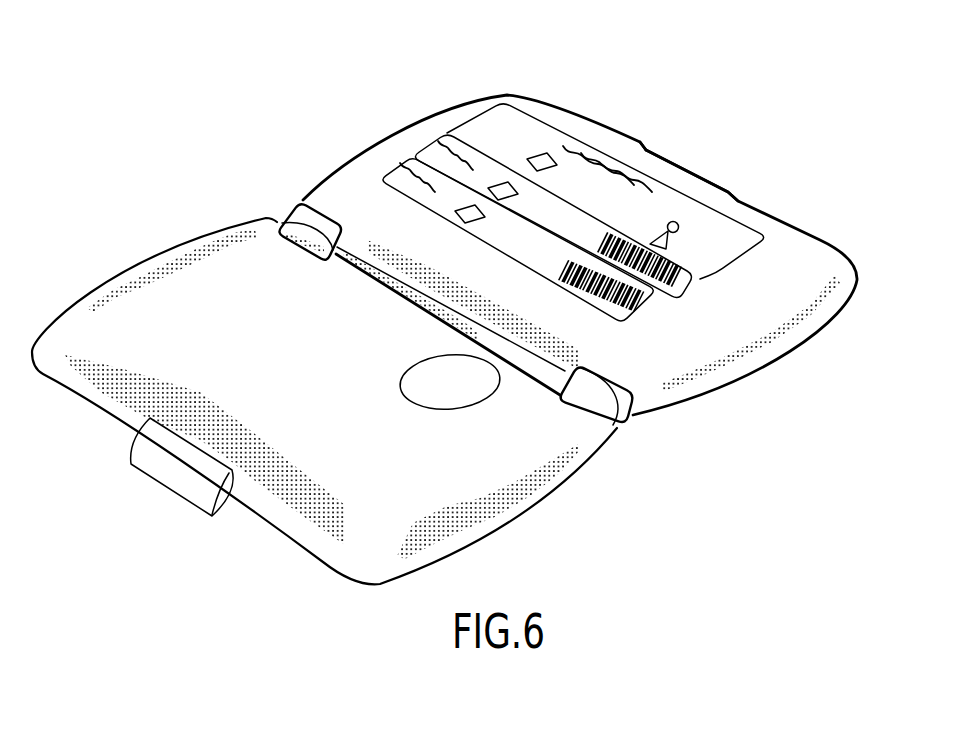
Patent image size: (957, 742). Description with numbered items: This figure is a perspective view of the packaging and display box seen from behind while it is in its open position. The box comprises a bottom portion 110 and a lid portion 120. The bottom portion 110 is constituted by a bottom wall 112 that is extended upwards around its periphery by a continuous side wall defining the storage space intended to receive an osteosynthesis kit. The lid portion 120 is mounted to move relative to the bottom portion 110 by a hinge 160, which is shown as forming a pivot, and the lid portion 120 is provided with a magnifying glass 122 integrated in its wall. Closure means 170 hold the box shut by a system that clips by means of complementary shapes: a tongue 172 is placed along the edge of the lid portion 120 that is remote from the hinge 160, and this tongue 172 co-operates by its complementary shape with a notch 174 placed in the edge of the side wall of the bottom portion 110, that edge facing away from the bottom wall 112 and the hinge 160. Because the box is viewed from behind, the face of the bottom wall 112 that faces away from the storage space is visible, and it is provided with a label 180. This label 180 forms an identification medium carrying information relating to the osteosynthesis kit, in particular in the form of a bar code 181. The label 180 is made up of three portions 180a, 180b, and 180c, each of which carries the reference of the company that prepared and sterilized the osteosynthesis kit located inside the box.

The bottom portion 110 is at (416, 118).
The bottom wall 112 is at (342, 192).
The lid portion 120 is at (153, 252).
The magnifying glass 122 is at (441, 398).
The hinge 160 is at (630, 400).
The closure means 170 is at (734, 190).
The tongue 172 is at (181, 486).
The notch 174 is at (683, 171).
The label 180 is at (517, 186).
The label portion 180a is at (485, 128).
The label portion 180b is at (423, 157).
The label portion 180c is at (386, 174).
The barcode 181 is at (627, 305).